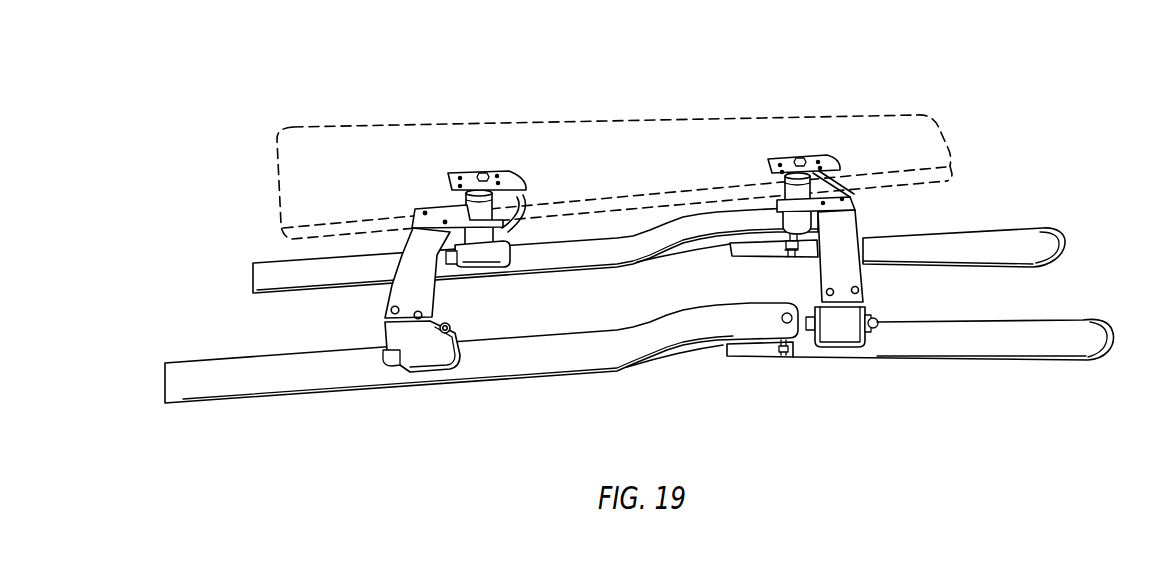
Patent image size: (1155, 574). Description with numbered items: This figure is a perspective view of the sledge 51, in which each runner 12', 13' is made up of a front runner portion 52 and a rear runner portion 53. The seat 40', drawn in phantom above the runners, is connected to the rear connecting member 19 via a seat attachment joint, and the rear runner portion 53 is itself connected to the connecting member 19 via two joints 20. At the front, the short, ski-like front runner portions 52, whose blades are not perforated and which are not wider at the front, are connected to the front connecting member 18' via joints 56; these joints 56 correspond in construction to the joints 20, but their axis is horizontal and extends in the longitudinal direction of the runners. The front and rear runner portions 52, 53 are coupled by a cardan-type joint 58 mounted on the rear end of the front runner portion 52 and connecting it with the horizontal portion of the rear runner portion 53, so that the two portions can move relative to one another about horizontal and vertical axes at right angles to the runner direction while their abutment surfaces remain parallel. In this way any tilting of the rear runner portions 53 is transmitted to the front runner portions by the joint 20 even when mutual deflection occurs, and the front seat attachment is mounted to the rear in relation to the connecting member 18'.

The sledge 51 is at (639, 240).
The seat 40' is at (614, 146).
The runner 12' is at (535, 264).
The runner 13' is at (481, 373).
The connecting member 18' is at (843, 229).
The connecting member 19 is at (398, 292).
The joint 20 is at (424, 362).
The front runner portion 52 is at (958, 353).
The rear runner portion 53 is at (483, 368).
The joint 56 is at (842, 330).
The cardan-type joint 58 is at (783, 360).